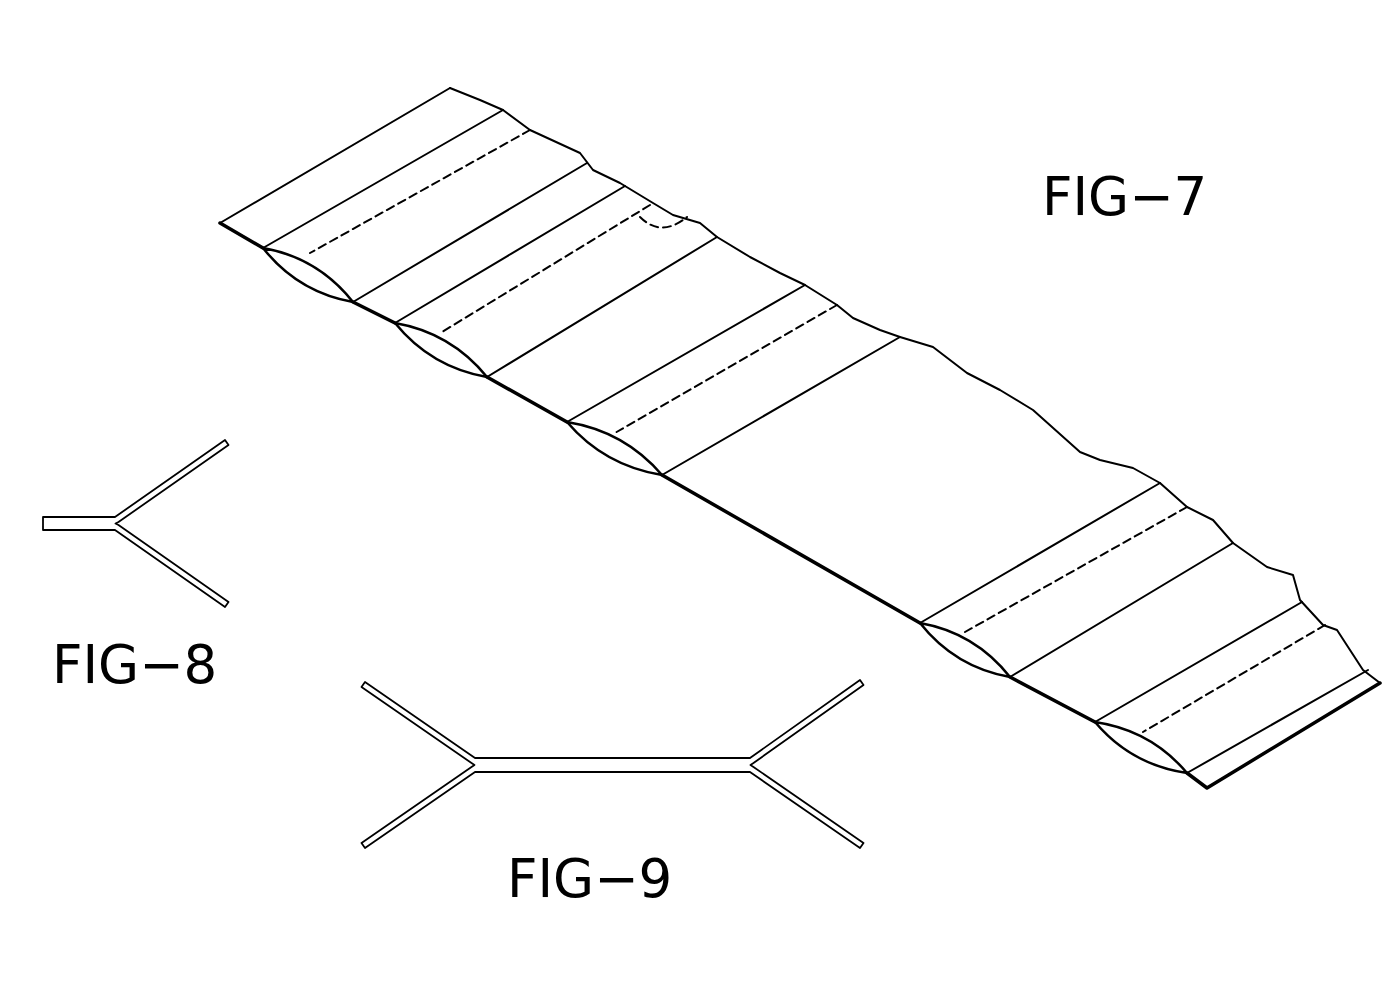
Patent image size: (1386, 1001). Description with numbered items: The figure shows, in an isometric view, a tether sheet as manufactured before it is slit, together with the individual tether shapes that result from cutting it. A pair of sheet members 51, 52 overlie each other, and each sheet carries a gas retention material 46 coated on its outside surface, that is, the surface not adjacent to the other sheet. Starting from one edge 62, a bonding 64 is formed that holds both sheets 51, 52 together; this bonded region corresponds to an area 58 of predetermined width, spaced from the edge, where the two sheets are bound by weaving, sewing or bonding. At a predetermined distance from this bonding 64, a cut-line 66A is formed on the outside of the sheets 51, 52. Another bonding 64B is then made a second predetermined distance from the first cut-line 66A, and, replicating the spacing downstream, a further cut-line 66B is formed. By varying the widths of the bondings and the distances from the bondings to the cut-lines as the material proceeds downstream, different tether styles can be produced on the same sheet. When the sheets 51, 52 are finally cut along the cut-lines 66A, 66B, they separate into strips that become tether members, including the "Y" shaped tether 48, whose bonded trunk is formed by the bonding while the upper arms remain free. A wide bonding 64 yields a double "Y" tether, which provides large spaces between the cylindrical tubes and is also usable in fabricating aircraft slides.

In FIG. 7, the gas retention material 46 is at (1008, 437).
In FIG. 7, the "Y" shaped tether 48 is at (283, 282).
In FIG. 8, the "Y" shaped tether 48 is at (77, 489).
In FIG. 7, the sheet member 51 is at (590, 450).
In FIG. 7, the sheet member 52 is at (460, 357).
In FIG. 7, the area 58 is at (418, 362).
In FIG. 7, the edge 62 is at (320, 160).
In FIG. 7, the bonding 64 is at (423, 123).
In FIG. 9, the bonding 64 is at (595, 749).
In FIG. 7, the bonding 64B is at (588, 188).
In FIG. 7, the cut-line 66A is at (508, 140).
In FIG. 7, the cut-line 66B is at (687, 217).